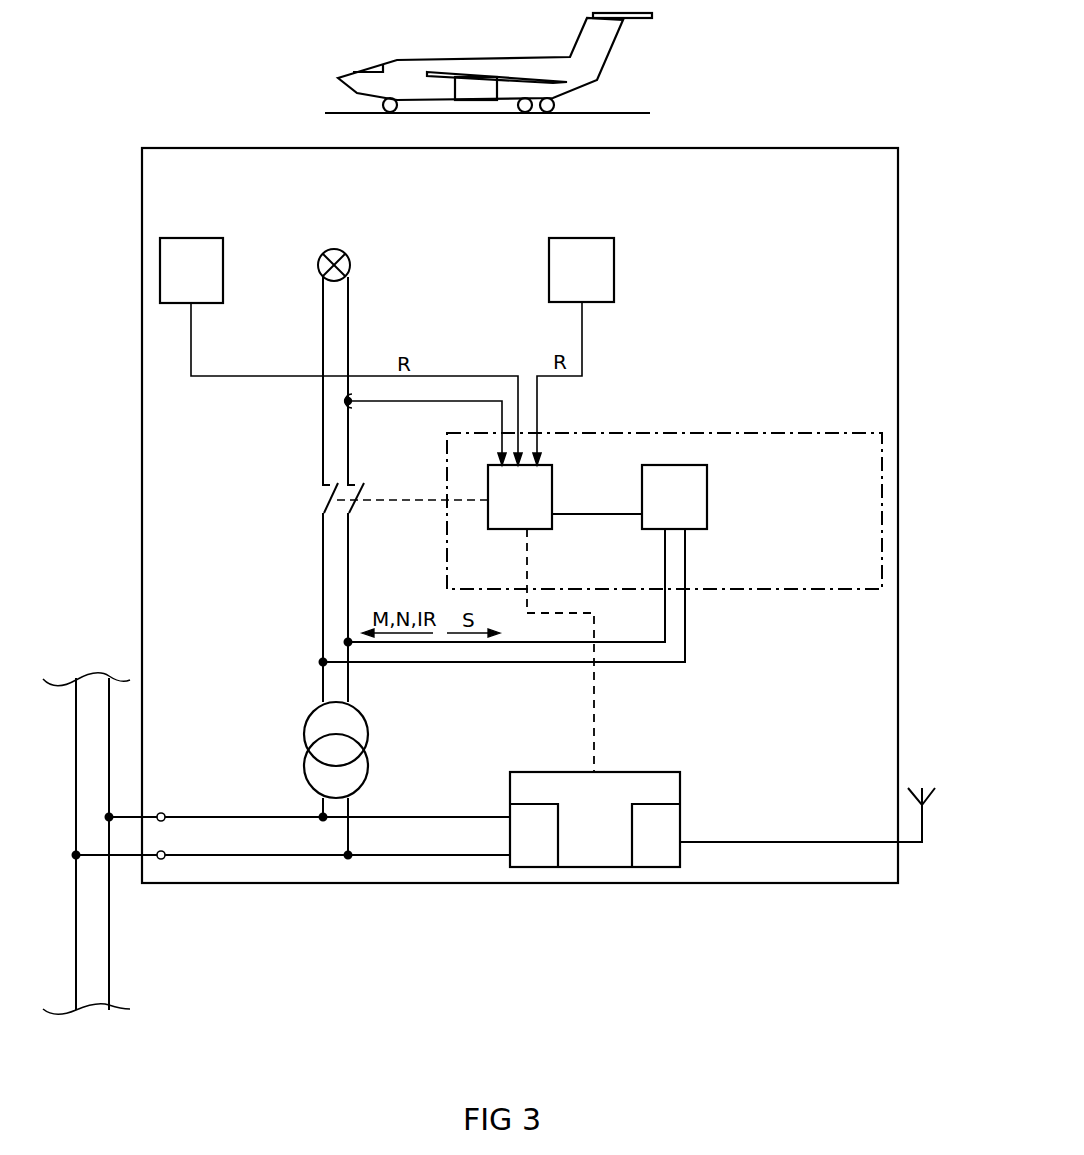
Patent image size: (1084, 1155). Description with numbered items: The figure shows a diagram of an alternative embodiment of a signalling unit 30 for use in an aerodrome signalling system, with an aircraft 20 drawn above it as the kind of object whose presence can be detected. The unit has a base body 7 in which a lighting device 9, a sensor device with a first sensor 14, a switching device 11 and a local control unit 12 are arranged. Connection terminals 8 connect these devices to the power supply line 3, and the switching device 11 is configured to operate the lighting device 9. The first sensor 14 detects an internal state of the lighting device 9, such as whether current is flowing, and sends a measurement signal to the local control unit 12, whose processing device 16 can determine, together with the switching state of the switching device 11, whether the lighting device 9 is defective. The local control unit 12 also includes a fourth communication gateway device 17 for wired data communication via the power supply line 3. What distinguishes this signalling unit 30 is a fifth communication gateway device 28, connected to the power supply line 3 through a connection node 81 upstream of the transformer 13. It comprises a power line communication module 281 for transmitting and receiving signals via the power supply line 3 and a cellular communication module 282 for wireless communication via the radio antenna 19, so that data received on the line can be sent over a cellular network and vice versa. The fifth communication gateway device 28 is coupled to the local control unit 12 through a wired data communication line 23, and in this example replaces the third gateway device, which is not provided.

The object 20 is at (466, 57).
The signalling unit 30 is at (217, 135).
The first sensor 14 is at (351, 406).
The lighting device 9 is at (350, 266).
The switching device 11 is at (325, 500).
The local control unit 12 is at (664, 486).
The processing device 16 is at (552, 497).
The fourth communication gateway device 17 is at (707, 497).
The transformer 13 is at (368, 727).
The data communication line 23 is at (594, 694).
The fifth communication gateway device 28 is at (646, 849).
The power line communication module 281 is at (558, 836).
The cellular communication module 282 is at (680, 856).
The base body 7 is at (533, 885).
The connection terminals 8 is at (161, 812).
The connection node 81 is at (329, 843).
The power supply line 3 is at (109, 947).
The radio antenna 19 is at (922, 830).